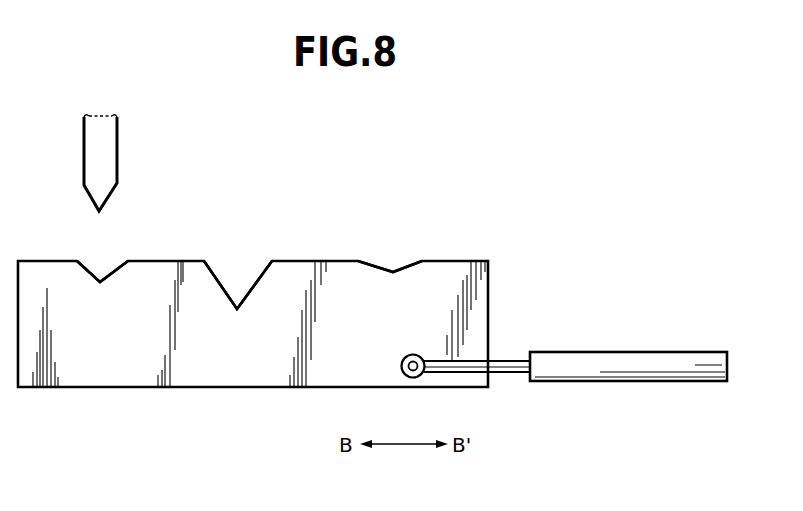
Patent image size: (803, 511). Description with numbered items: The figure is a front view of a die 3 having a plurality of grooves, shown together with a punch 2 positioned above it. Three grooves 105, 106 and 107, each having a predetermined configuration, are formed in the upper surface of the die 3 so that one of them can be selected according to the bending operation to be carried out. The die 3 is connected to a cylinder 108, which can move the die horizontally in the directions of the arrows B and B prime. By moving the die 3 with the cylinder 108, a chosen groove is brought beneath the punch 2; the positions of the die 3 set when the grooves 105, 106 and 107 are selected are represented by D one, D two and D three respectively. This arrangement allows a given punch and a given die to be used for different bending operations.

The punch 2 is at (117, 148).
The die 3 is at (498, 287).
The groove 105 is at (103, 266).
The groove 106 is at (236, 284).
The groove 107 is at (393, 262).
The cylinder 108 is at (608, 358).